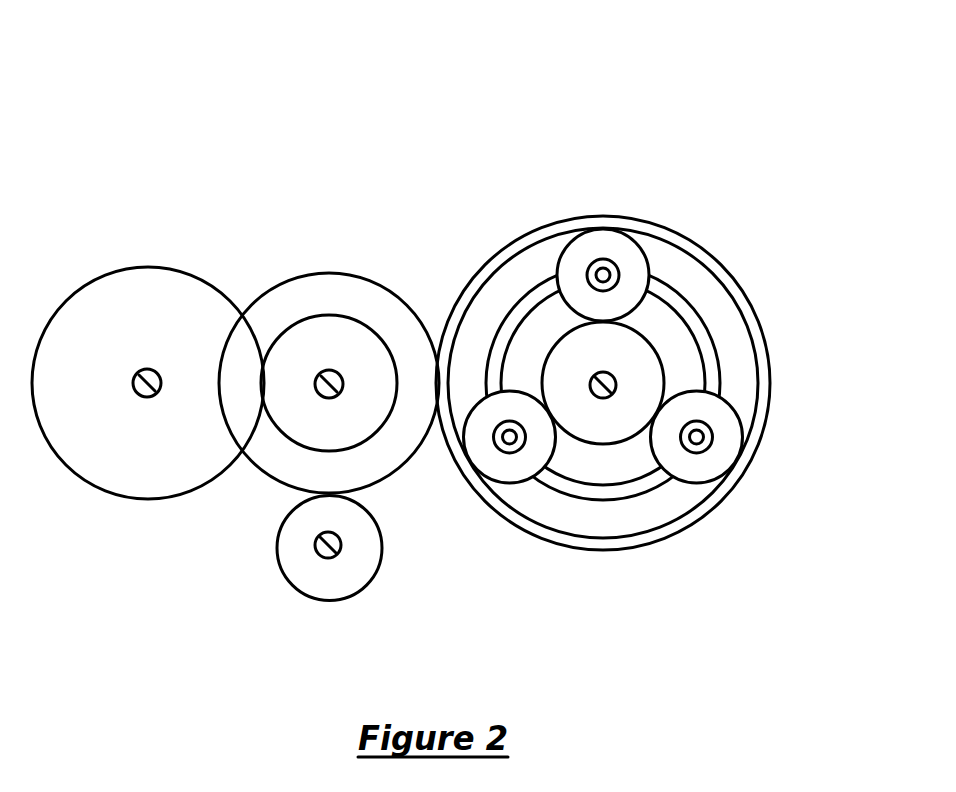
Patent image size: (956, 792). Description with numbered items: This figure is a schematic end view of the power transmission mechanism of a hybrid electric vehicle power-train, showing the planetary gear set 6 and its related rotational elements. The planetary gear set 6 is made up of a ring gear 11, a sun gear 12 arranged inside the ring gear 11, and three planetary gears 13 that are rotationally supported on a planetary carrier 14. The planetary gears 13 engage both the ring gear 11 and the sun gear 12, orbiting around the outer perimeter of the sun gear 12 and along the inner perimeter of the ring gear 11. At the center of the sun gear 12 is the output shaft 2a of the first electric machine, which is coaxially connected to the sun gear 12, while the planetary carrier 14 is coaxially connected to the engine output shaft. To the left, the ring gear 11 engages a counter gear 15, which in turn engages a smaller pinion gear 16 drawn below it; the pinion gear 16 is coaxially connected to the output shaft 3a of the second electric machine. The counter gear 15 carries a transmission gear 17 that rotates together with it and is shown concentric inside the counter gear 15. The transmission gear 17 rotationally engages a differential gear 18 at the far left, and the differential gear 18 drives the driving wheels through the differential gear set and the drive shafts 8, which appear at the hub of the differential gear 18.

The planetary gear set 6 is at (637, 316).
The drive shafts 8 is at (143, 397).
The ring gear 11 is at (705, 250).
The sun gear 12 is at (615, 447).
The planetary gears 13 is at (578, 236).
The planetary carrier 14 is at (715, 343).
The counter gear 15 is at (340, 272).
The pinion gear 16 is at (292, 587).
The transmission gear 17 is at (301, 317).
The differential gear 18 is at (148, 266).
The output shaft of the first electric machine 2a is at (616, 385).
The output shaft of the second electric machine 3a is at (330, 558).